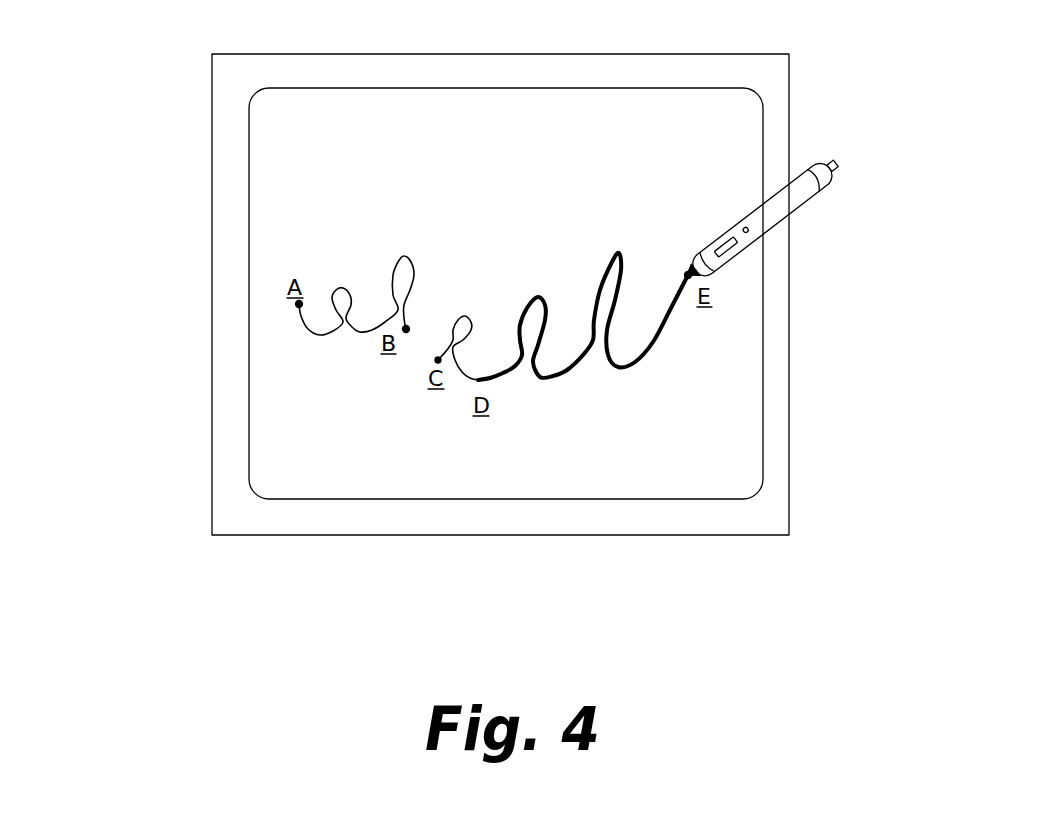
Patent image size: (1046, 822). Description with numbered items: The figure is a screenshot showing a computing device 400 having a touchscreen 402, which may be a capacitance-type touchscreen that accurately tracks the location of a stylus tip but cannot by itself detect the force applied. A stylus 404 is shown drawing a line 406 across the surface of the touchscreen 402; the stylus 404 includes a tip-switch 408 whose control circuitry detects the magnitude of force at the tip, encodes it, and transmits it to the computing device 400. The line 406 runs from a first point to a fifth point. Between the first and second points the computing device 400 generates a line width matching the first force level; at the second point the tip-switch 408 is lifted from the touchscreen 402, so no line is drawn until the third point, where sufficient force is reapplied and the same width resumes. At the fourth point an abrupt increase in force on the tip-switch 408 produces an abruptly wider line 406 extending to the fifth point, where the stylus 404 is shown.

The computing device 400 is at (184, 90).
The touchscreen 402 is at (743, 172).
The stylus 404 is at (818, 228).
The line 406 is at (415, 272).
The tip-switch 408 is at (684, 272).